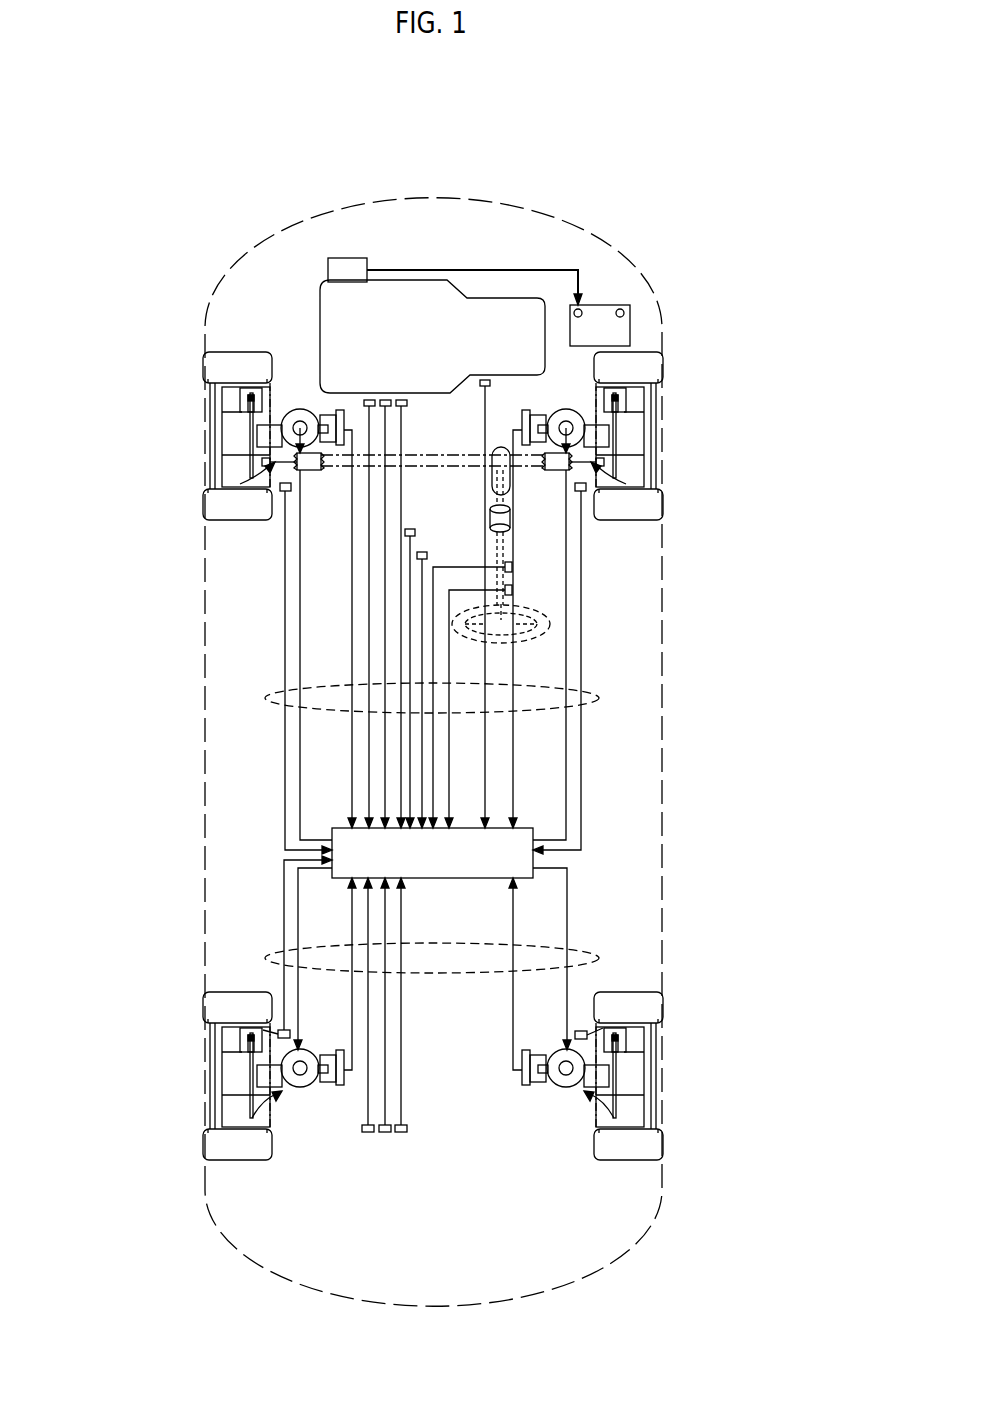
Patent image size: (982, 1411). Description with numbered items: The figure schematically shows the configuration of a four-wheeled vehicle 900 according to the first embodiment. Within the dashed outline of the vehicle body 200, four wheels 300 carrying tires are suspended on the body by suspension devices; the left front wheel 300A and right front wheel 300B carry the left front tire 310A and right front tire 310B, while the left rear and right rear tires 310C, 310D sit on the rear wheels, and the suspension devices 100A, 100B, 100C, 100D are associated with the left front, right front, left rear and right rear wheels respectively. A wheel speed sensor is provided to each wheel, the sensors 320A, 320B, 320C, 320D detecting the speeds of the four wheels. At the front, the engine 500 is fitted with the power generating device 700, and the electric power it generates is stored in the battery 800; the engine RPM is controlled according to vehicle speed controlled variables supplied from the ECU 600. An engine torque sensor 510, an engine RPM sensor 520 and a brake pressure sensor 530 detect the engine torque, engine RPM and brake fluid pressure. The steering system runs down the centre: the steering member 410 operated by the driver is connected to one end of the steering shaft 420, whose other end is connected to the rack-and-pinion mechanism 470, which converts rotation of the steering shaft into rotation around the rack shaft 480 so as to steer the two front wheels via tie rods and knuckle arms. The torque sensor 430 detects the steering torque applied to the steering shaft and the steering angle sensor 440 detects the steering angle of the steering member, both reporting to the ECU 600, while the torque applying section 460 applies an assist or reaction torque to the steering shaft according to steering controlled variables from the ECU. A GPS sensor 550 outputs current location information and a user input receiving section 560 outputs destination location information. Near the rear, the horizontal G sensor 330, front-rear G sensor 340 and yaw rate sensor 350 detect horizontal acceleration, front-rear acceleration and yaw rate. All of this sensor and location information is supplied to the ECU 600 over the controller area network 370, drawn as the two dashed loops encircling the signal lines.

The vehicle 900 is at (646, 150).
The vehicle body 200 is at (648, 279).
The power generating device 700 is at (360, 260).
The battery 800 is at (625, 330).
The engine 500 is at (327, 332).
The engine torque sensor 510 is at (372, 399).
The engine RPM sensor 520 is at (388, 399).
The brake pressure sensor 530 is at (403, 399).
The wheel 300A is at (212, 397).
The wheel 300B is at (654, 397).
The wheels 300 is at (225, 1040).
The tire 310A is at (217, 510).
The tire 310B is at (649, 510).
The tire 310C is at (217, 1152).
The tire 310D is at (650, 1152).
The wheel speed sensor 320A is at (272, 490).
The wheel speed sensor 320B is at (594, 490).
The wheel speed sensor 320C is at (276, 1033).
The wheel speed sensor 320D is at (592, 1033).
The suspension device 100A is at (213, 482).
The suspension device 100B is at (653, 482).
The suspension device 100C is at (213, 1122).
The suspension device 100D is at (655, 1122).
The rack shaft 480 is at (424, 455).
The rack-and-pinion mechanism 470 is at (490, 476).
The torque applying section 460 is at (511, 521).
The steering angle sensor 440 is at (513, 568).
The torque sensor 430 is at (513, 590).
The steering shaft 420 is at (504, 604).
The steering member 410 is at (542, 632).
The GPS sensor 550 is at (415, 530).
The user input receiving section 560 is at (428, 553).
The controller area network 370 is at (600, 957).
The electronic control unit 600 is at (426, 879).
The yaw rate sensor 350 is at (369, 1132).
The front-rear G sensor 340 is at (385, 1132).
The horizontal G sensor 330 is at (401, 1132).